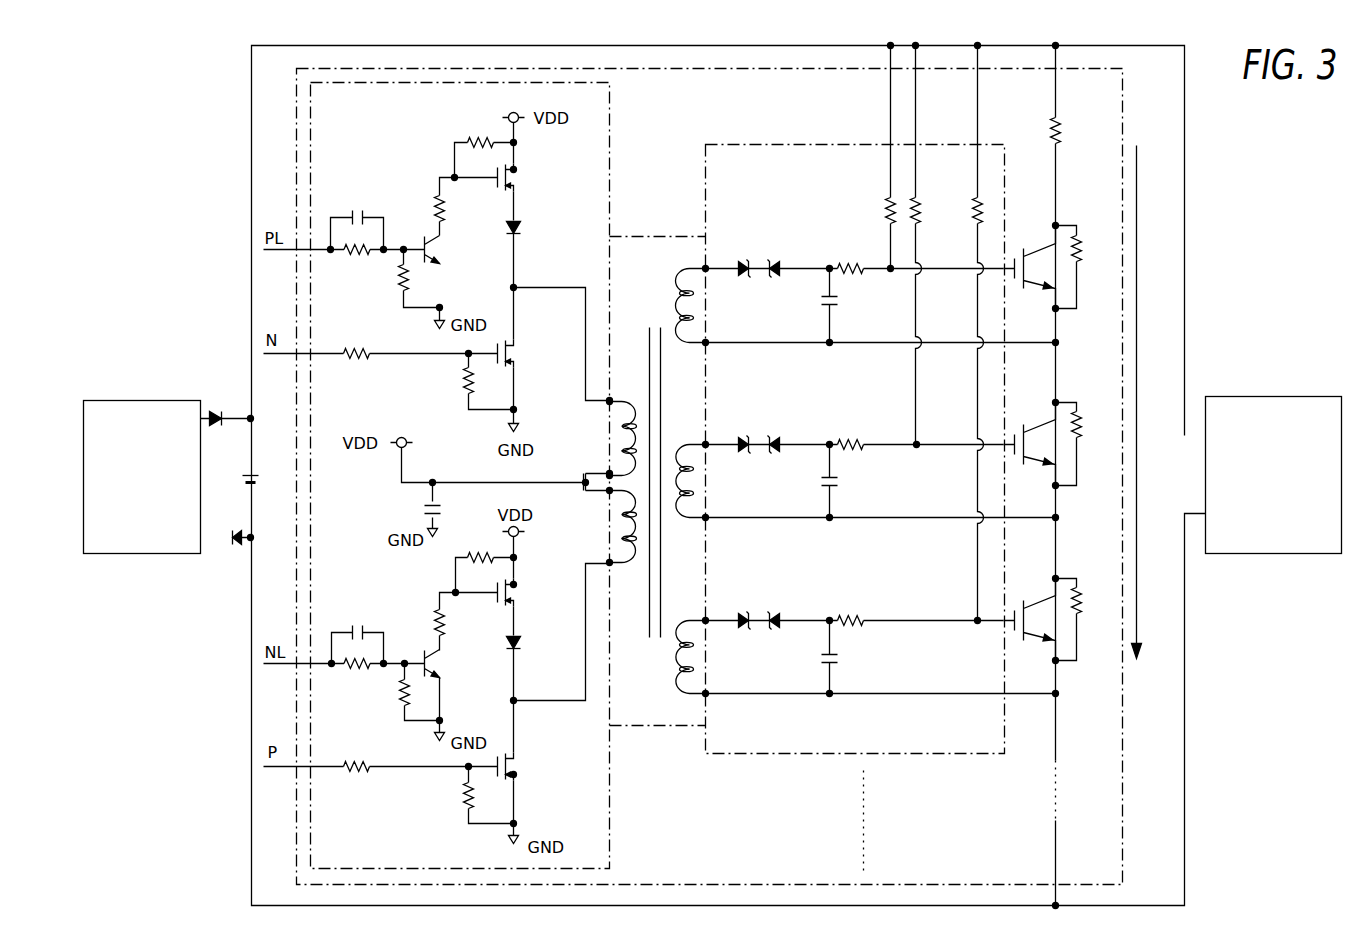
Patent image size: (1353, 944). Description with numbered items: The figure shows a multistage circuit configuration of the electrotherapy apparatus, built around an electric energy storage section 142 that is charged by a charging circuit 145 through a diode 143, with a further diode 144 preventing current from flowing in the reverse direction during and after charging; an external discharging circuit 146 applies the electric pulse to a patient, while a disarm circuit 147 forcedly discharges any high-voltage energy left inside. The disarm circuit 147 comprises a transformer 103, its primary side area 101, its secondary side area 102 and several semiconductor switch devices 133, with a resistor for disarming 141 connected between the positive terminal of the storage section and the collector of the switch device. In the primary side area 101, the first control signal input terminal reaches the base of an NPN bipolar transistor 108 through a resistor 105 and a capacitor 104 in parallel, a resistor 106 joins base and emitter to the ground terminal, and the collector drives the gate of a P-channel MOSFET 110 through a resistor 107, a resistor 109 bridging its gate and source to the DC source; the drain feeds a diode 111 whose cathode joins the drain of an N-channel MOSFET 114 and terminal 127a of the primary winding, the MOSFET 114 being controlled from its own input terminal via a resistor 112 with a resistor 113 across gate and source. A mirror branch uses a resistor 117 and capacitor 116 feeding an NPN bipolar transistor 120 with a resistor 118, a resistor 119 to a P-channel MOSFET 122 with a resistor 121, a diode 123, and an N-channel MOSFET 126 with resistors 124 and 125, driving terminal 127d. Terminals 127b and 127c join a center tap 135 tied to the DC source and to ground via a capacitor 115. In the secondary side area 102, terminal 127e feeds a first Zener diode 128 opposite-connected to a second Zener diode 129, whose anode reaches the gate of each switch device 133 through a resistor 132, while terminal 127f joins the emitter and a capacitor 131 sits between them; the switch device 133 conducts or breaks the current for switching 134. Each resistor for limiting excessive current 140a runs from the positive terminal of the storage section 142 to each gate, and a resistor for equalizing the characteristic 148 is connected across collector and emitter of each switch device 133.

The primary side area 101 is at (609, 113).
The secondary side area 102 is at (783, 144).
The transformer 103 is at (634, 236).
The capacitor 104 is at (357, 208).
The resistor 105 is at (353, 253).
The resistor 106 is at (400, 286).
The resistor 107 is at (445, 208).
The NPN bipolar transistor 108 is at (441, 249).
The resistor 109 is at (472, 138).
The P-channel MOSFET 110 is at (516, 173).
The diode 111 is at (520, 226).
The resistor 112 is at (353, 358).
The resistor 113 is at (464, 382).
The N-channel MOSFET 114 is at (516, 349).
The capacitor 115 is at (419, 511).
The capacitor 116 is at (357, 622).
The resistor 117 is at (353, 667).
The resistor 118 is at (402, 700).
The resistor 119 is at (445, 622).
The NPN bipolar transistor 120 is at (441, 663).
The resistor 121 is at (472, 552).
The P-channel MOSFET 122 is at (516, 588).
The diode 123 is at (520, 641).
The resistor 124 is at (353, 771).
The resistor 125 is at (467, 791).
The N-channel MOSFET 126 is at (516, 770).
The terminal of primary winding 127a is at (609, 401).
The terminal of primary winding 127b is at (609, 475).
The terminal of primary winding 127c is at (609, 490).
The terminal of primary winding 127d is at (609, 564).
The terminal of secondary winding 127e is at (707, 272).
The terminal of secondary winding 127f is at (707, 346).
The first Zener diode 128 is at (742, 259).
The second Zener diode 129 is at (782, 260).
The capacitor 131 is at (818, 306).
The resistor 132 is at (856, 274).
The semiconductor switch device 133 is at (1011, 246).
The current for switching 134 is at (1158, 148).
The center tap 135 is at (580, 480).
The resistor for limiting excessive current 140a is at (886, 198).
The resistor for disarming 141 is at (1058, 119).
The electric energy storage section 142 is at (250, 474).
The diode 143 is at (214, 412).
The diode 144 is at (240, 546).
The charging circuit 145 is at (140, 402).
The external discharging circuit 146 is at (1282, 385).
The disarm circuit 147 is at (1121, 100).
The resistor for equalizing characteristic 148 is at (1076, 254).